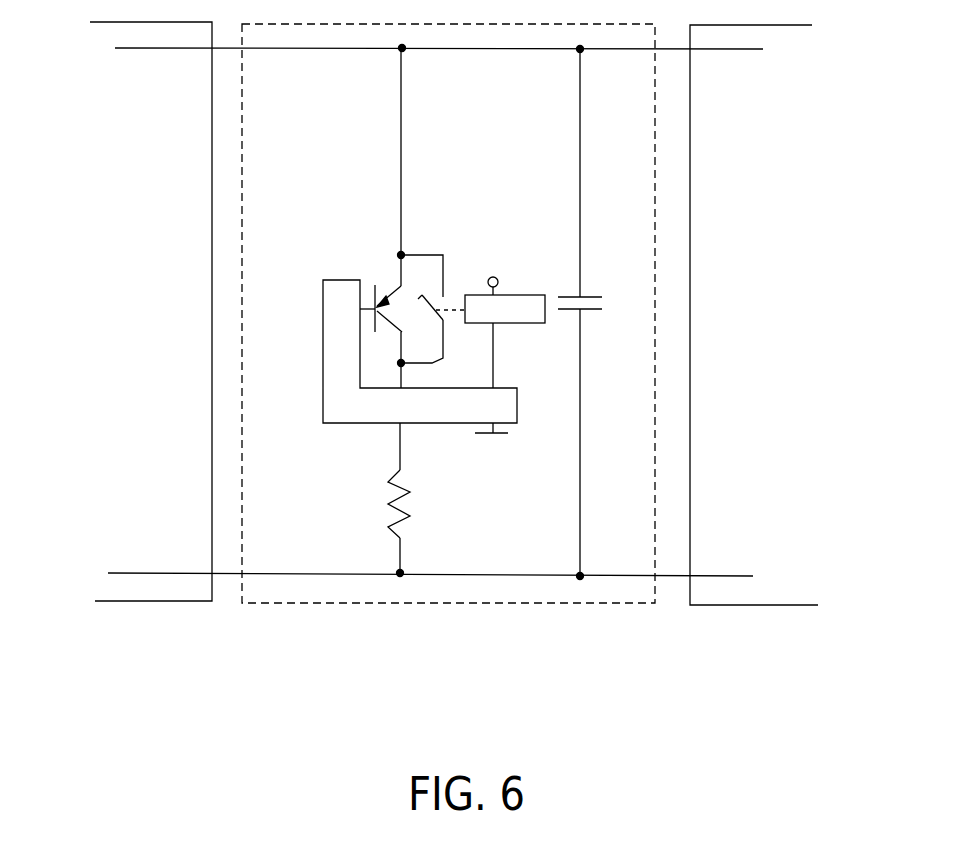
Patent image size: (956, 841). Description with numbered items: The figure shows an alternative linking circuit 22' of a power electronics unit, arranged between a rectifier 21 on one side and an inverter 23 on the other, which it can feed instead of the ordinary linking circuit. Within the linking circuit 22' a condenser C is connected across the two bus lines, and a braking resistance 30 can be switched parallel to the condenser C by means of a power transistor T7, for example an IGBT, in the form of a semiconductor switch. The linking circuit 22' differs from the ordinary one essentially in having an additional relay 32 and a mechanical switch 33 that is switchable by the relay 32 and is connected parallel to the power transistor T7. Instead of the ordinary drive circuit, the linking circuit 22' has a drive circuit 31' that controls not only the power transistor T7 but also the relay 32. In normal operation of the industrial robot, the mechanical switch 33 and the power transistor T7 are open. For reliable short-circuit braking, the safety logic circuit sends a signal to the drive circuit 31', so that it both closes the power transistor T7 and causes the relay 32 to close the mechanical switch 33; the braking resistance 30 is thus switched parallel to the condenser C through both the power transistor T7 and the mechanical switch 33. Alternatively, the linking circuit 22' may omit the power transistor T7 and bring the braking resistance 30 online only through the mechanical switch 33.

The rectifier 21 is at (150, 583).
The linking circuit 22' is at (448, 345).
The inverter 23 is at (770, 588).
The braking resistance 30 is at (392, 487).
The drive circuit 31' is at (389, 351).
The relay 32 is at (510, 292).
The mechanical switch 33 is at (442, 268).
The power transistor T7 is at (379, 301).
The condenser C is at (588, 315).